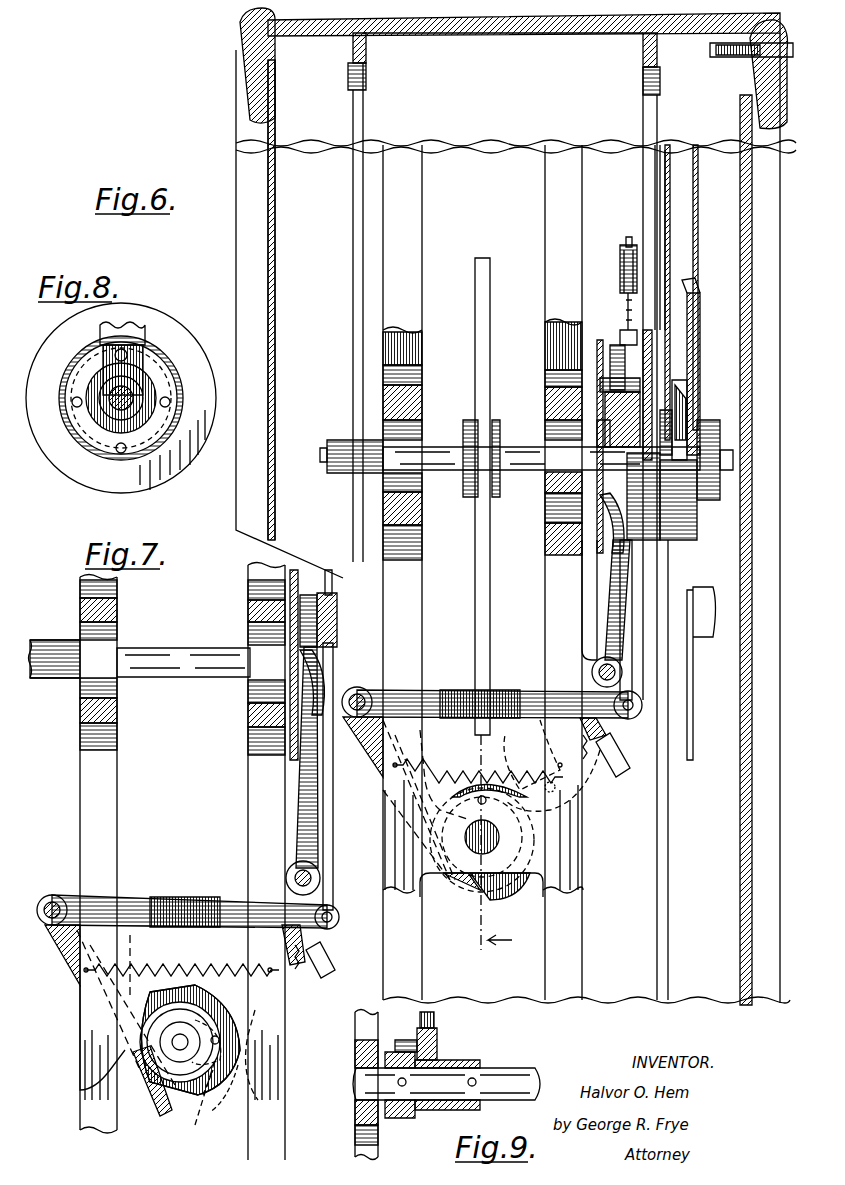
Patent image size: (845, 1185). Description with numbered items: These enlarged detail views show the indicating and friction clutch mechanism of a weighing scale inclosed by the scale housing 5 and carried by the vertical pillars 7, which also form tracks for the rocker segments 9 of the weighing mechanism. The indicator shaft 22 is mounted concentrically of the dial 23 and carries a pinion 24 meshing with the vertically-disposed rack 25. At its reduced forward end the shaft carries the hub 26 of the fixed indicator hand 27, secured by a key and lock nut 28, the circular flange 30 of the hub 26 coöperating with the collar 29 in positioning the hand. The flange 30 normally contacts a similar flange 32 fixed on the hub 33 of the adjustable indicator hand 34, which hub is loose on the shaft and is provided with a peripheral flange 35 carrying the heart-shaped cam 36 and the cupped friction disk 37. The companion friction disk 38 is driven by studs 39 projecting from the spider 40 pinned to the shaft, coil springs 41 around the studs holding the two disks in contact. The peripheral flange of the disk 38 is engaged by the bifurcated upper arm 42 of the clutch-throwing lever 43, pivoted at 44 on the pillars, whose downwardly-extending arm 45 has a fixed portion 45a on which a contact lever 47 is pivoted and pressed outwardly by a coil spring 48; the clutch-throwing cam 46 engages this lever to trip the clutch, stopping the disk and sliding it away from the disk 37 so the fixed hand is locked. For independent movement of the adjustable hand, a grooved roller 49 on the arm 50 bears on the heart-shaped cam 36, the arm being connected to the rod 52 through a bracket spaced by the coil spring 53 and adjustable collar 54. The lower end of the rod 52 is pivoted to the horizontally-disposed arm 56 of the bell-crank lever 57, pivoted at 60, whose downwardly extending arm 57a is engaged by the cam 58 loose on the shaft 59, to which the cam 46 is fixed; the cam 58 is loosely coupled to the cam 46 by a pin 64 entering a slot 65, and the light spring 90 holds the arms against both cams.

In FIG. 6, the scale housing 5 is at (498, 28).
In FIG. 6, the vertical pillars 7 is at (560, 207).
In FIG. 7, the vertical pillars 7 is at (86, 782).
In FIG. 9, the vertical pillars 7 is at (362, 1040).
In FIG. 6, the rocker segments 9 is at (492, 855).
In FIG. 6, the indicator shaft 22 is at (510, 450).
In FIG. 7, the indicator shaft 22 is at (148, 676).
In FIG. 8, the indicator shaft 22 is at (115, 403).
In FIG. 6, the dial 23 is at (662, 118).
In FIG. 6, the pinion 24 is at (497, 490).
In FIG. 6, the rack 25 is at (488, 315).
In FIG. 6, the hub 26 is at (700, 425).
In FIG. 6, the fixed indicator hand 27 is at (700, 362).
In FIG. 6, the lock nut 28 is at (725, 472).
In FIG. 6, the collar 29 is at (700, 498).
In FIG. 6, the circular flange 30 is at (690, 396).
In FIG. 6, the flange 32 is at (678, 395).
In FIG. 6, the hub 33 is at (655, 500).
In FIG. 6, the adjustable indicator hand 34 is at (668, 282).
In FIG. 6, the peripheral flange 35 is at (665, 405).
In FIG. 6, the heart-shaped cam 36 is at (652, 365).
In FIG. 6, the cupped friction disk 37 is at (612, 355).
In FIG. 7, the cupped friction disk 37 is at (338, 620).
In FIG. 6, the friction disk 38 is at (598, 345).
In FIG. 7, the friction disk 38 is at (298, 598).
In FIG. 8, the friction disk 38 is at (160, 333).
In FIG. 6, the studs 39 is at (610, 398).
In FIG. 8, the studs 39 is at (121, 377).
In FIG. 6, the spider 40 is at (600, 430).
In FIG. 8, the spider 40 is at (137, 338).
In FIG. 6, the coil springs 41 is at (606, 382).
In FIG. 6, the bifurcated upper arm 42 is at (610, 545).
In FIG. 7, the bifurcated upper arm 42 is at (305, 665).
In FIG. 6, the clutch-throwing lever 43 is at (606, 645).
In FIG. 7, the clutch-throwing lever 43 is at (300, 855).
In FIG. 6, the pivot 44 is at (592, 672).
In FIG. 6, the downwardly-extending arm 45 is at (560, 740).
In FIG. 6, the fixed portion 45a is at (600, 728).
In FIG. 7, the fixed portion 45a is at (305, 932).
In FIG. 6, the clutch-throwing cam 46 is at (458, 790).
In FIG. 7, the clutch-throwing cam 46 is at (212, 1100).
In FIG. 9, the clutch-throwing cam 46 is at (400, 1120).
In FIG. 6, the contact lever 47 is at (598, 785).
In FIG. 7, the contact lever 47 is at (226, 1090).
In FIG. 6, the coil spring 48 is at (615, 752).
In FIG. 7, the coil spring 48 is at (318, 968).
In FIG. 6, the grooved roller 49 is at (628, 260).
In FIG. 6, the arm 50 is at (618, 333).
In FIG. 6, the rod 52 is at (630, 658).
In FIG. 7, the rod 52 is at (334, 855).
In FIG. 6, the coil spring 53 is at (627, 295).
In FIG. 6, the adjustable collar 54 is at (625, 245).
In FIG. 6, the horizontally-disposed arm 56 is at (438, 688).
In FIG. 7, the horizontally-disposed arm 56 is at (188, 906).
In FIG. 7, the bell-crank lever 57 is at (62, 948).
In FIG. 6, the downwardly extending arm 57a is at (375, 755).
In FIG. 6, the cam 58 is at (500, 895).
In FIG. 7, the cam 58 is at (170, 1002).
In FIG. 9, the cam 58 is at (445, 1062).
In FIG. 9, the shaft 59 is at (500, 1075).
In FIG. 6, the pivot 60 is at (358, 688).
In FIG. 6, the pin 64 is at (500, 790).
In FIG. 7, the pin 64 is at (222, 1040).
In FIG. 9, the pin 64 is at (440, 1040).
In FIG. 7, the slot 65 is at (192, 1118).
In FIG. 6, the light spring 90 is at (442, 763).
In FIG. 7, the light spring 90 is at (170, 968).